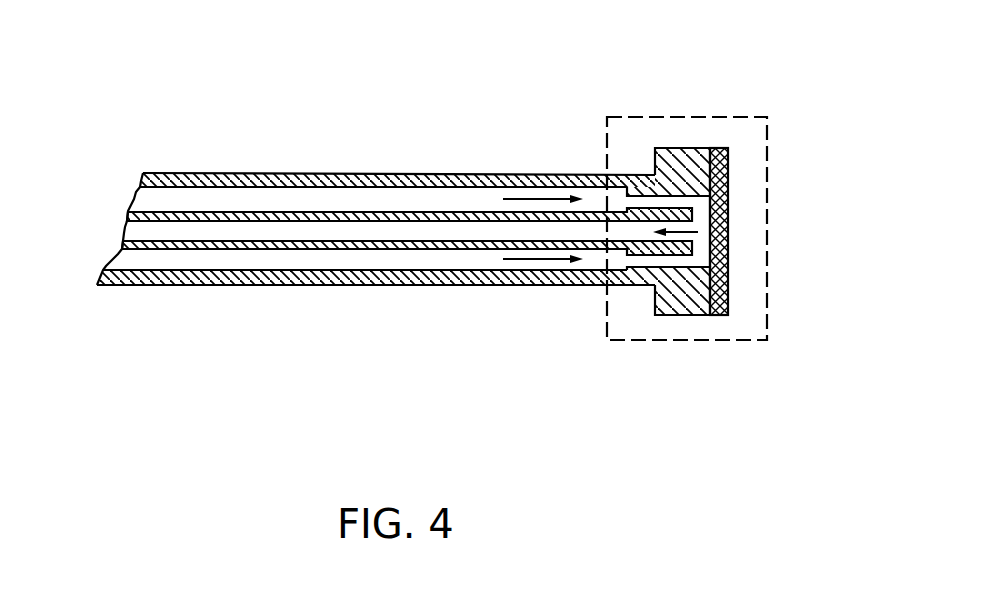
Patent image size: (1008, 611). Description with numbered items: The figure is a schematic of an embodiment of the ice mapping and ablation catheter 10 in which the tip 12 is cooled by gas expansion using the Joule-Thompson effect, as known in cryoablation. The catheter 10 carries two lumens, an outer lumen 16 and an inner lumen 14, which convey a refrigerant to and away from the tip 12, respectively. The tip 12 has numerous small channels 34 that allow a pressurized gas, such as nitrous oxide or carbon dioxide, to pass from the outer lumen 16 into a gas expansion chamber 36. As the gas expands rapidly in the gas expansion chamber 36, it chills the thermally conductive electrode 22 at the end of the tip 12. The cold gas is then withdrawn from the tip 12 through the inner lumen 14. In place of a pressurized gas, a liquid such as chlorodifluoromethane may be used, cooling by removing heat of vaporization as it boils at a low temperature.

The ice mapping and ablation catheter 10 is at (396, 251).
The tip 12 is at (693, 218).
The inner lumen 14 is at (223, 228).
The outer lumen 16 is at (360, 200).
The thermally conductive electrode 22 is at (728, 246).
The small channels 34 is at (642, 198).
The gas expansion chamber 36 is at (700, 220).